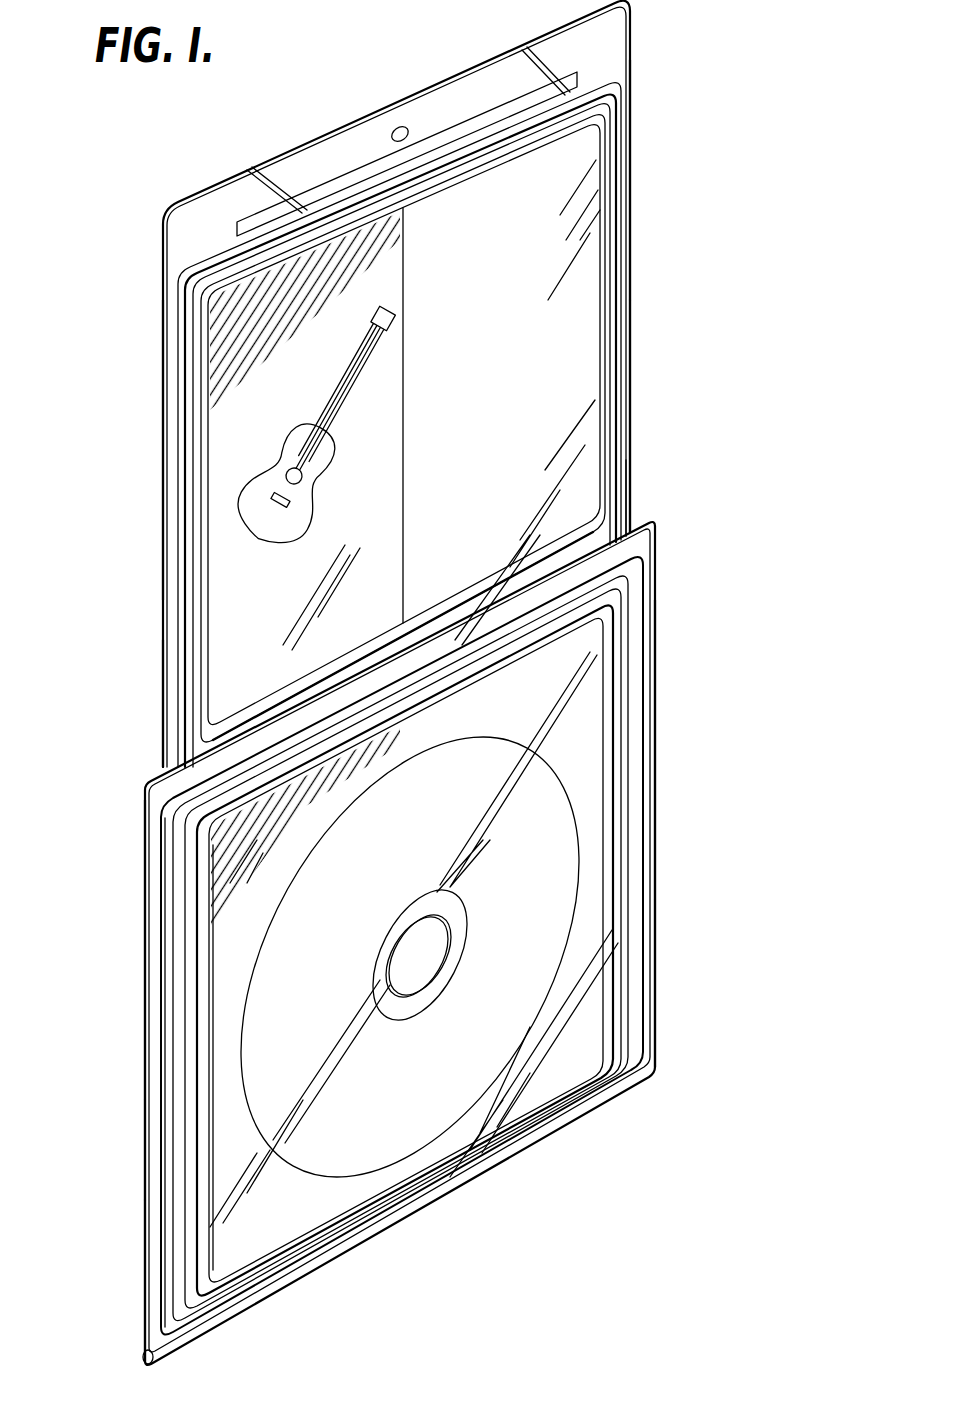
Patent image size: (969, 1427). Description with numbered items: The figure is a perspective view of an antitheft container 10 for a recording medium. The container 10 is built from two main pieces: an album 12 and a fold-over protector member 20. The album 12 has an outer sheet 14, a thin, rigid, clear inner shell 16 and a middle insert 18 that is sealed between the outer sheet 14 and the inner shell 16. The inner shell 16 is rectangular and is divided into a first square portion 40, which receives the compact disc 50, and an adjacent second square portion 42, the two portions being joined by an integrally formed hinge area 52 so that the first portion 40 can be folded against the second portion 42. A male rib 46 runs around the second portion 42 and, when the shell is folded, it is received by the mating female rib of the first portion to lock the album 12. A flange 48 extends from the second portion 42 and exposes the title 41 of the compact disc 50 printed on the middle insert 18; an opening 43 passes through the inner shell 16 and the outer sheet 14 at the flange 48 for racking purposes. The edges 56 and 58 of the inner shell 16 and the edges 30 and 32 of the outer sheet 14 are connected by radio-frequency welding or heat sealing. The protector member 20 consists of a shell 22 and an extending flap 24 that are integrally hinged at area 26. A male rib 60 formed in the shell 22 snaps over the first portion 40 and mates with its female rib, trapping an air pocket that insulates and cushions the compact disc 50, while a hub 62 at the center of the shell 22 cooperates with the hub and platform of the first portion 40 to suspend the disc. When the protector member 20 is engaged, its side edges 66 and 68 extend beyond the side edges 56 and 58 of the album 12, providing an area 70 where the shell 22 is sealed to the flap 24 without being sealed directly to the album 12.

The antitheft container 10 is at (26, 818).
The album 12 is at (137, 586).
The outer sheet 14 is at (620, 10).
The inner shell 16 is at (606, 430).
The middle insert 18 is at (580, 492).
The fold-over protector member 20 is at (666, 684).
The shell 22 is at (592, 906).
The extending flap 24 is at (146, 878).
The hinge area 26 is at (265, 1297).
The edge of outer sheet 30 is at (160, 443).
The edge of outer sheet 32 is at (632, 315).
The first square portion 40 is at (585, 1060).
The title 41 is at (578, 82).
The second square portion 42 is at (592, 248).
The opening 43 is at (410, 128).
The male rib 46 is at (627, 146).
The flange 48 is at (295, 165).
The compact disc 50 is at (480, 755).
The hinge area 52 is at (605, 560).
The side edge of album 56 is at (163, 690).
The side edge of album 58 is at (628, 506).
The male rib 60 is at (622, 648).
The hub 62 is at (458, 915).
The side edge of protector member 66 is at (652, 830).
The side edge of protector member 68 is at (147, 1133).
The sealing area 70 is at (152, 1222).